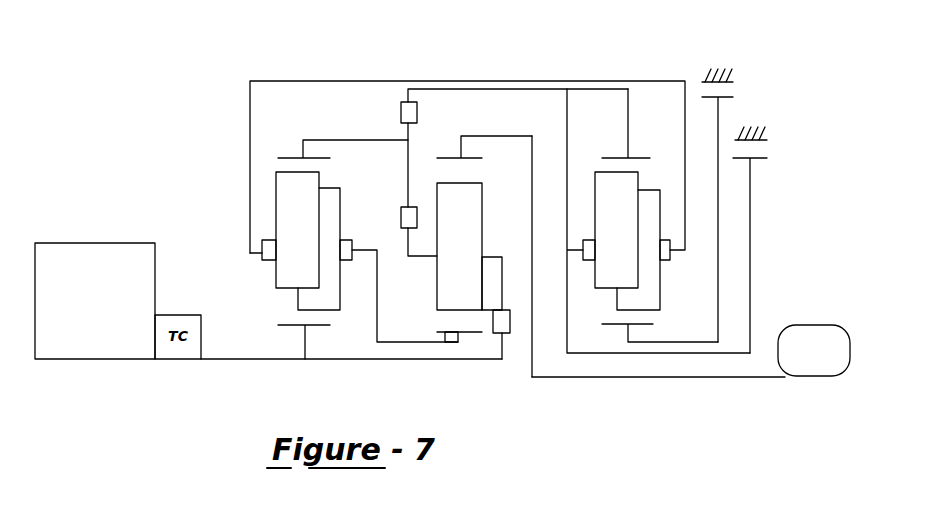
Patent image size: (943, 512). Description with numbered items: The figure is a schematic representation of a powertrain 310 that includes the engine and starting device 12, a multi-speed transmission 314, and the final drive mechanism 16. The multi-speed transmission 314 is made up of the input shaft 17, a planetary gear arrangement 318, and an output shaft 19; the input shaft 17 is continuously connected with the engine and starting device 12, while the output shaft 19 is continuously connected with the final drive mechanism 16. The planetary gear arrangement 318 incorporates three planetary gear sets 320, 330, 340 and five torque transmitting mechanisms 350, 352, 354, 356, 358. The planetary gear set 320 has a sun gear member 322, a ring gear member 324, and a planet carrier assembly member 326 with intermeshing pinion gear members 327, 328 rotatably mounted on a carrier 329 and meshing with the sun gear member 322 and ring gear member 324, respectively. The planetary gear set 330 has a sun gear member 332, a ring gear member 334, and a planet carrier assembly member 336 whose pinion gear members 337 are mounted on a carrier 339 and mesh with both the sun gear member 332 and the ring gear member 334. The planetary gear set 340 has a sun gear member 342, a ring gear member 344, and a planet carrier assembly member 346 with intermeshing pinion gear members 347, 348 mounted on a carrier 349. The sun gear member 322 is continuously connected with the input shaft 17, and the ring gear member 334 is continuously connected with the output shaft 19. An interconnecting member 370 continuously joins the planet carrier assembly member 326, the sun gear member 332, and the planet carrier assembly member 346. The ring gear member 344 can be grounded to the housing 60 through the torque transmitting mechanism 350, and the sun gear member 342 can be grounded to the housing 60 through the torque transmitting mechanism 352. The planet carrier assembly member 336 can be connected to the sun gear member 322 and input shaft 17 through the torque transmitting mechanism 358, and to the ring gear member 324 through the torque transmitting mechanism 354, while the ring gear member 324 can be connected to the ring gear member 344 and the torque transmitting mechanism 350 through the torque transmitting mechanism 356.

The powertrain 310 is at (133, 108).
The engine and starting device 12 is at (78, 242).
The input shaft 17 is at (213, 360).
The output shaft 19 is at (752, 378).
The final drive mechanism 16 is at (805, 324).
The multi-speed transmission 314 is at (517, 57).
The planetary gear arrangement 318 is at (433, 368).
The planetary gear set 320 is at (350, 318).
The sun gear member 322 is at (280, 324).
The ring gear member 324 is at (291, 157).
The planet carrier assembly member 326 is at (270, 200).
The pinion gear member 327 is at (342, 283).
The pinion gear member 328 is at (290, 200).
The carrier 329 is at (262, 250).
The planetary gear set 330 is at (478, 348).
The sun gear member 332 is at (445, 345).
The ring gear member 334 is at (450, 157).
The planet carrier assembly member 336 is at (485, 178).
The pinion gear member 337 is at (485, 205).
The carrier 339 is at (488, 256).
The planetary gear set 340 is at (598, 335).
The sun gear member 342 is at (648, 326).
The ring gear member 344 is at (645, 157).
The planet carrier assembly member 346 is at (663, 207).
The pinion gear member 347 is at (662, 291).
The pinion gear member 348 is at (628, 215).
The carrier 349 is at (674, 250).
The torque transmitting mechanism 350 is at (765, 151).
The torque transmitting mechanism 352 is at (740, 77).
The torque transmitting mechanism 354 is at (388, 212).
The torque transmitting mechanism 356 is at (382, 108).
The torque transmitting mechanism 358 is at (518, 365).
The interconnecting member 370 is at (658, 81).
The housing 60 is at (740, 68).